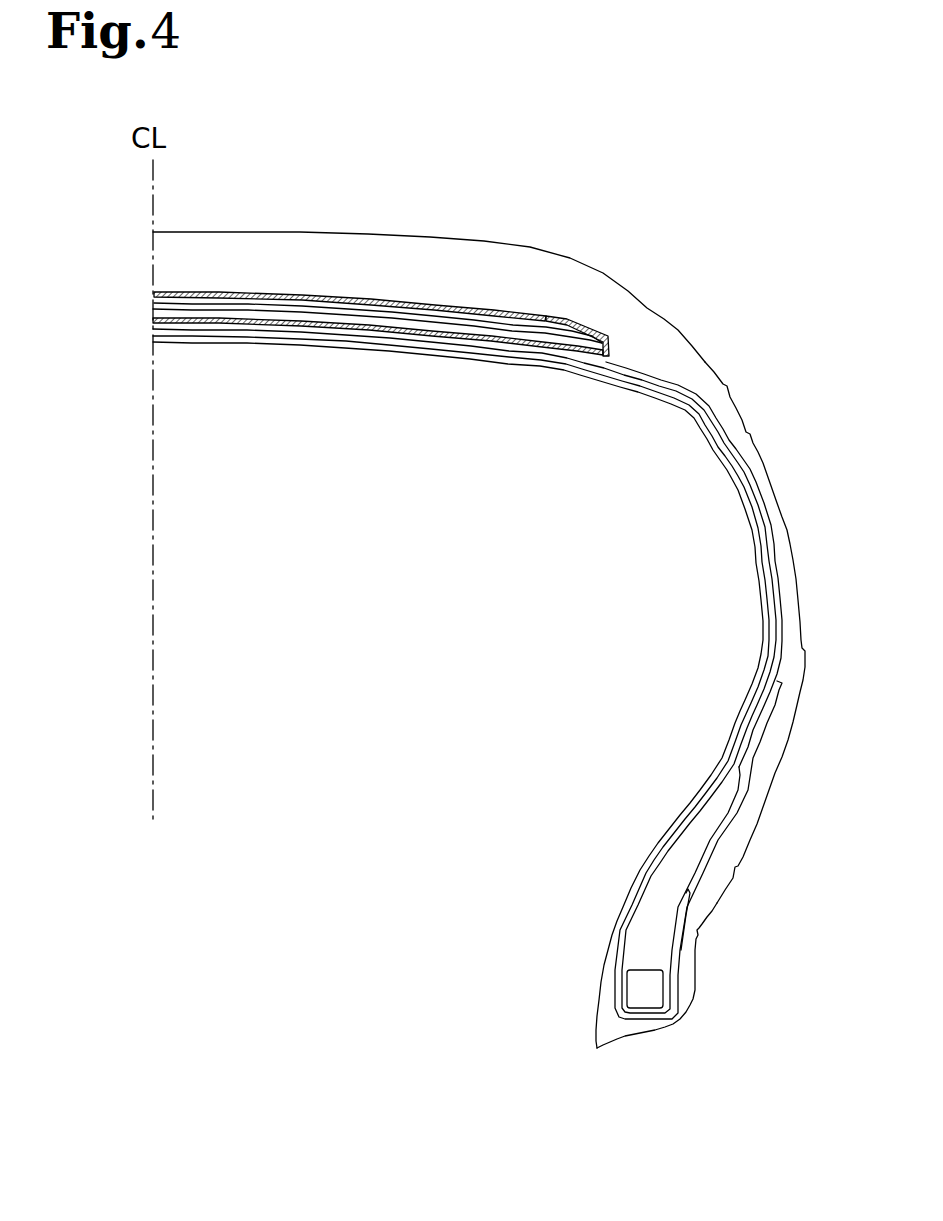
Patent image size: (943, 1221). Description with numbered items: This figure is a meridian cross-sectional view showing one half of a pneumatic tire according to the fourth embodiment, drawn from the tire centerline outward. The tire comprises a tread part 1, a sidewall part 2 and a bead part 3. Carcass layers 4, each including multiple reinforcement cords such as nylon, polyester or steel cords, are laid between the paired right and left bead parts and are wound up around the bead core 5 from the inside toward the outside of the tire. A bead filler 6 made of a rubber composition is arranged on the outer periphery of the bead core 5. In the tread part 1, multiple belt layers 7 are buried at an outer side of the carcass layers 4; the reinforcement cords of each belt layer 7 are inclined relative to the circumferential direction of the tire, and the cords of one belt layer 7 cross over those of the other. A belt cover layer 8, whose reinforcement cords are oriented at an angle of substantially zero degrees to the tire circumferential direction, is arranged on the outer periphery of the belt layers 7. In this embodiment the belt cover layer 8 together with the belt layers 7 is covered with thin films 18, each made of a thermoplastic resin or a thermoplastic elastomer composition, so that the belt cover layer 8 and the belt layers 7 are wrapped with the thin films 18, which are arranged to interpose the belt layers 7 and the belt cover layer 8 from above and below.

The tread part 1 is at (475, 241).
The sidewall part 2 is at (803, 561).
The bead part 3 is at (702, 978).
The carcass layer 4 is at (710, 426).
The bead core 5 is at (640, 993).
The bead filler 6 is at (645, 932).
The belt layer 7 is at (523, 329).
The belt cover layer 8 is at (568, 322).
The thin film 18 is at (357, 295).